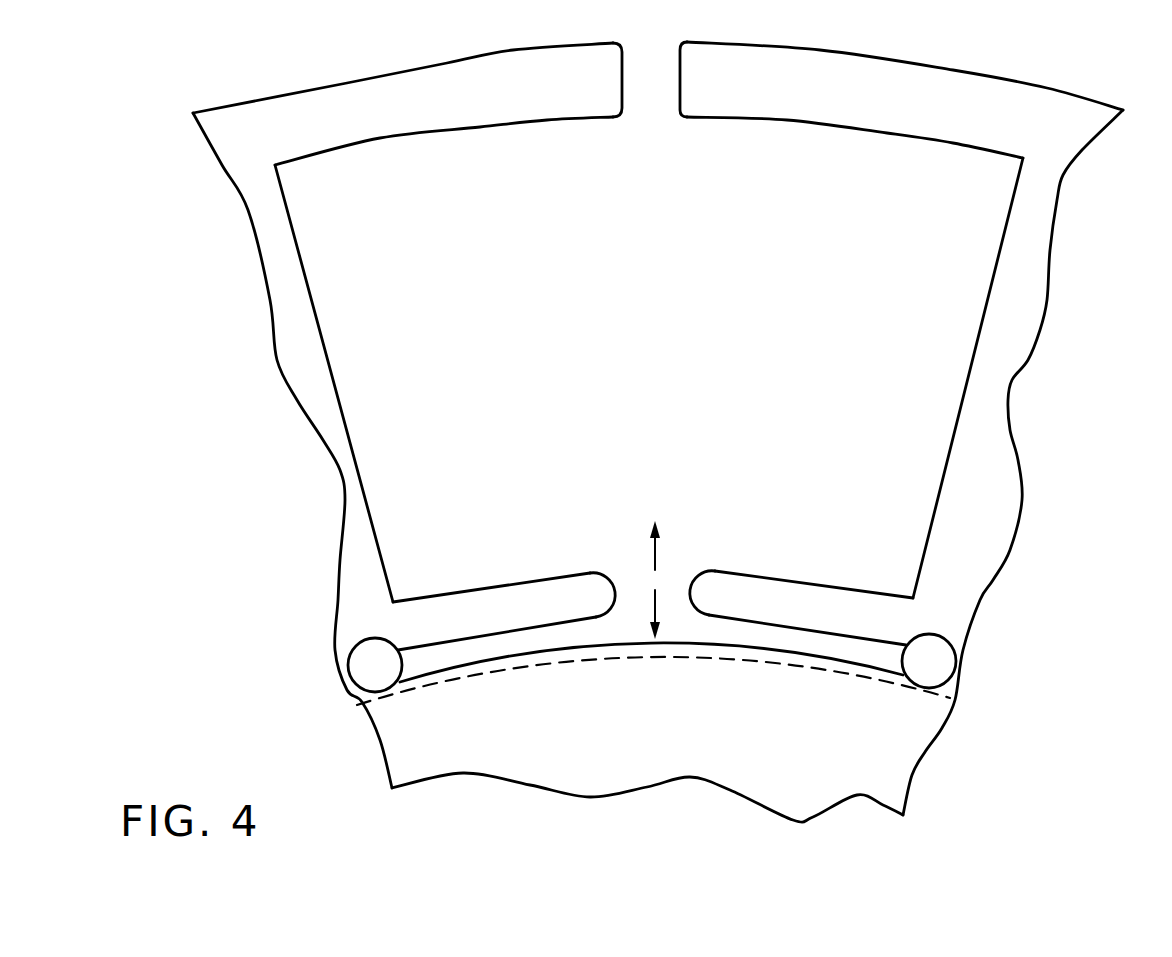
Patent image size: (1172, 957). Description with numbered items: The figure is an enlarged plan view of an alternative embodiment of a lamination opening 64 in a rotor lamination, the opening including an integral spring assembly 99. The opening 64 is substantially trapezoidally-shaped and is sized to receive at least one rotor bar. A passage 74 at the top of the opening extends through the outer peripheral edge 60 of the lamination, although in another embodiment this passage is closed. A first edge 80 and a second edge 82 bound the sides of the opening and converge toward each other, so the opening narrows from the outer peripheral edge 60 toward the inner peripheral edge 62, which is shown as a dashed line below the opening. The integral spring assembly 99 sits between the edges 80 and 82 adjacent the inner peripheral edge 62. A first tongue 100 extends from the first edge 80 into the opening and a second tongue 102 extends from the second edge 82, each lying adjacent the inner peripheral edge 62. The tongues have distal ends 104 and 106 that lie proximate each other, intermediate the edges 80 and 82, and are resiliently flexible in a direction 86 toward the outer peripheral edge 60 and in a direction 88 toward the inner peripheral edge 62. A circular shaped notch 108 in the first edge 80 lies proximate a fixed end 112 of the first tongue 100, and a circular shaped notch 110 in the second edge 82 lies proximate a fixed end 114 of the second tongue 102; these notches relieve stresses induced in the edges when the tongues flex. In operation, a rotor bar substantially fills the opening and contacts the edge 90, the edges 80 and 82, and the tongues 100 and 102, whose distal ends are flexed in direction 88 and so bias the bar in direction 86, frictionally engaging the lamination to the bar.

The outer peripheral edge 60 is at (1043, 85).
The inner peripheral edge 62 is at (838, 677).
The lamination opening 64 is at (656, 339).
The passage 74 is at (653, 90).
The first edge 80 is at (328, 358).
The second edge 82 is at (978, 336).
The direction 86 is at (650, 552).
The direction 88 is at (650, 605).
The edge 90 is at (443, 133).
The integral spring assembly 99 is at (822, 499).
The first tongue 100 is at (504, 570).
The second tongue 102 is at (833, 605).
The distal end 104 is at (597, 595).
The distal end 106 is at (801, 573).
The circular shaped notch 108 is at (365, 668).
The circular shaped notch 110 is at (942, 665).
The fixed end 112 is at (398, 623).
The fixed end 114 is at (900, 618).